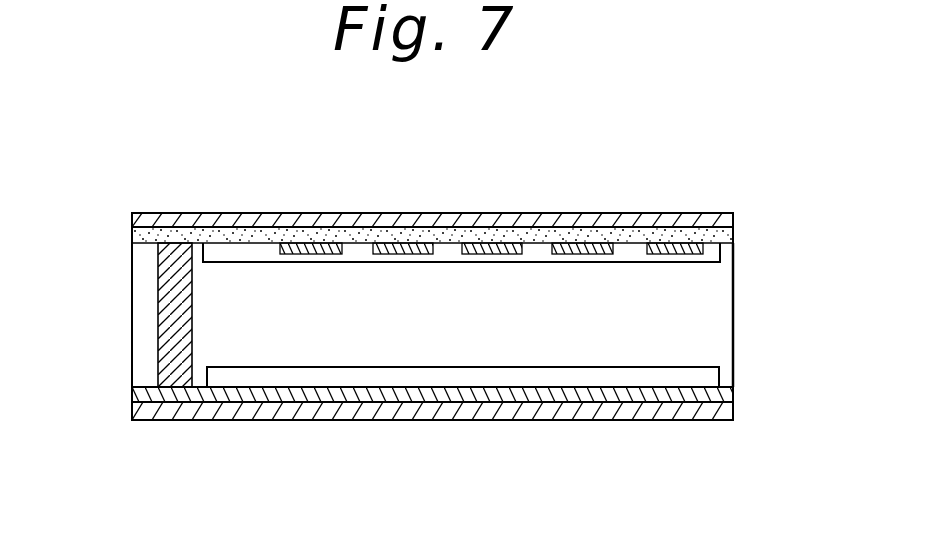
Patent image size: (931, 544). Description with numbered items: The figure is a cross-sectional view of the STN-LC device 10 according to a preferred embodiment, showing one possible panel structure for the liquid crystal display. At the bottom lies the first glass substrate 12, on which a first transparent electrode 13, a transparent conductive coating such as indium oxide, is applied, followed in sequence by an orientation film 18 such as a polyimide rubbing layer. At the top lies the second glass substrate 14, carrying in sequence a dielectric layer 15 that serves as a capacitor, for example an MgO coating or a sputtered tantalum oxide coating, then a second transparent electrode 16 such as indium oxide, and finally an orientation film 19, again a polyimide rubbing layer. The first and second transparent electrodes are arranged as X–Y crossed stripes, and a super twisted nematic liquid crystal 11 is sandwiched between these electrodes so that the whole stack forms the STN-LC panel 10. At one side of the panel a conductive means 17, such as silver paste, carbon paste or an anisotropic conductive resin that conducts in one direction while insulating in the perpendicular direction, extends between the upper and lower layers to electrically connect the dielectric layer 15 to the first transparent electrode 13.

The LC device 10 is at (723, 198).
The super twisted nematic liquid crystal 11 is at (718, 332).
The first glass substrate 12 is at (733, 410).
The first transparent electrode 13 is at (733, 397).
The second glass substrate 14 is at (733, 218).
The dielectric layer 15 is at (733, 243).
The second transparent electrode 16 is at (693, 254).
The conductive means 17 is at (170, 313).
The orientation film 18 is at (691, 378).
The orientation film 19 is at (628, 250).